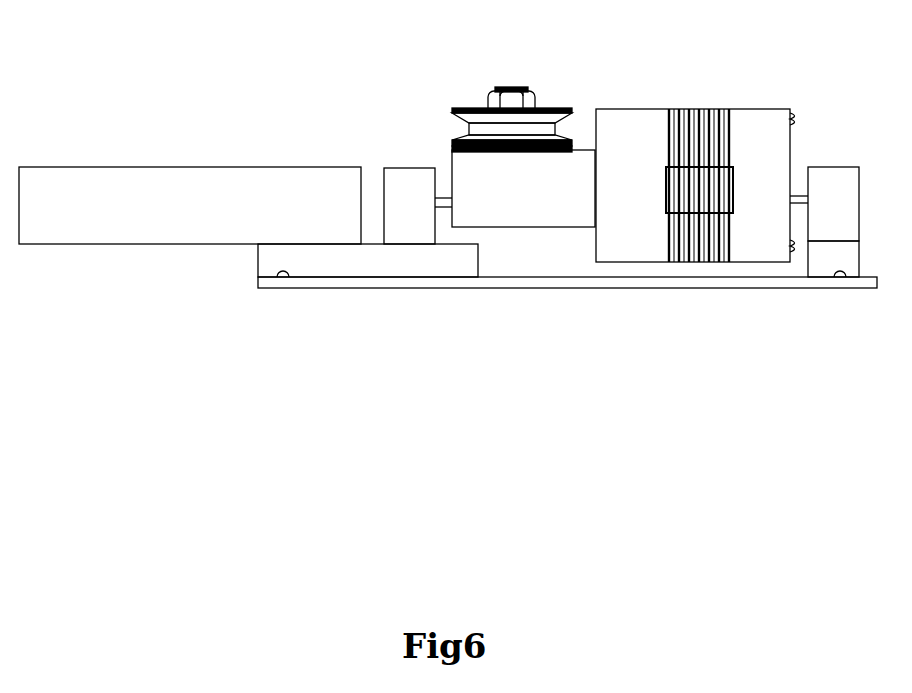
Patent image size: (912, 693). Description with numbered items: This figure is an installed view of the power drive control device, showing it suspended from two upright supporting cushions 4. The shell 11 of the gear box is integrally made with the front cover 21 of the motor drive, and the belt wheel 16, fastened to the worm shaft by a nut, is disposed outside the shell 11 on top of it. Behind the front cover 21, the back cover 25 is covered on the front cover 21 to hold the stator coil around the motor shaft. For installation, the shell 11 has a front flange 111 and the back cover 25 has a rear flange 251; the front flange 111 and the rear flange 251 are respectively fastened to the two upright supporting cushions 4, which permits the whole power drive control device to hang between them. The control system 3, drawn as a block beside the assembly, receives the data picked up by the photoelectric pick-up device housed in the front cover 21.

The control system 3 is at (177, 182).
The upright supporting cushions 4 is at (398, 182).
The front flange 111 is at (447, 197).
The shell 11 is at (527, 227).
The belt wheel 16 is at (560, 108).
The front cover 21 is at (638, 109).
The back cover 25 is at (757, 108).
The rear flange 251 is at (803, 195).